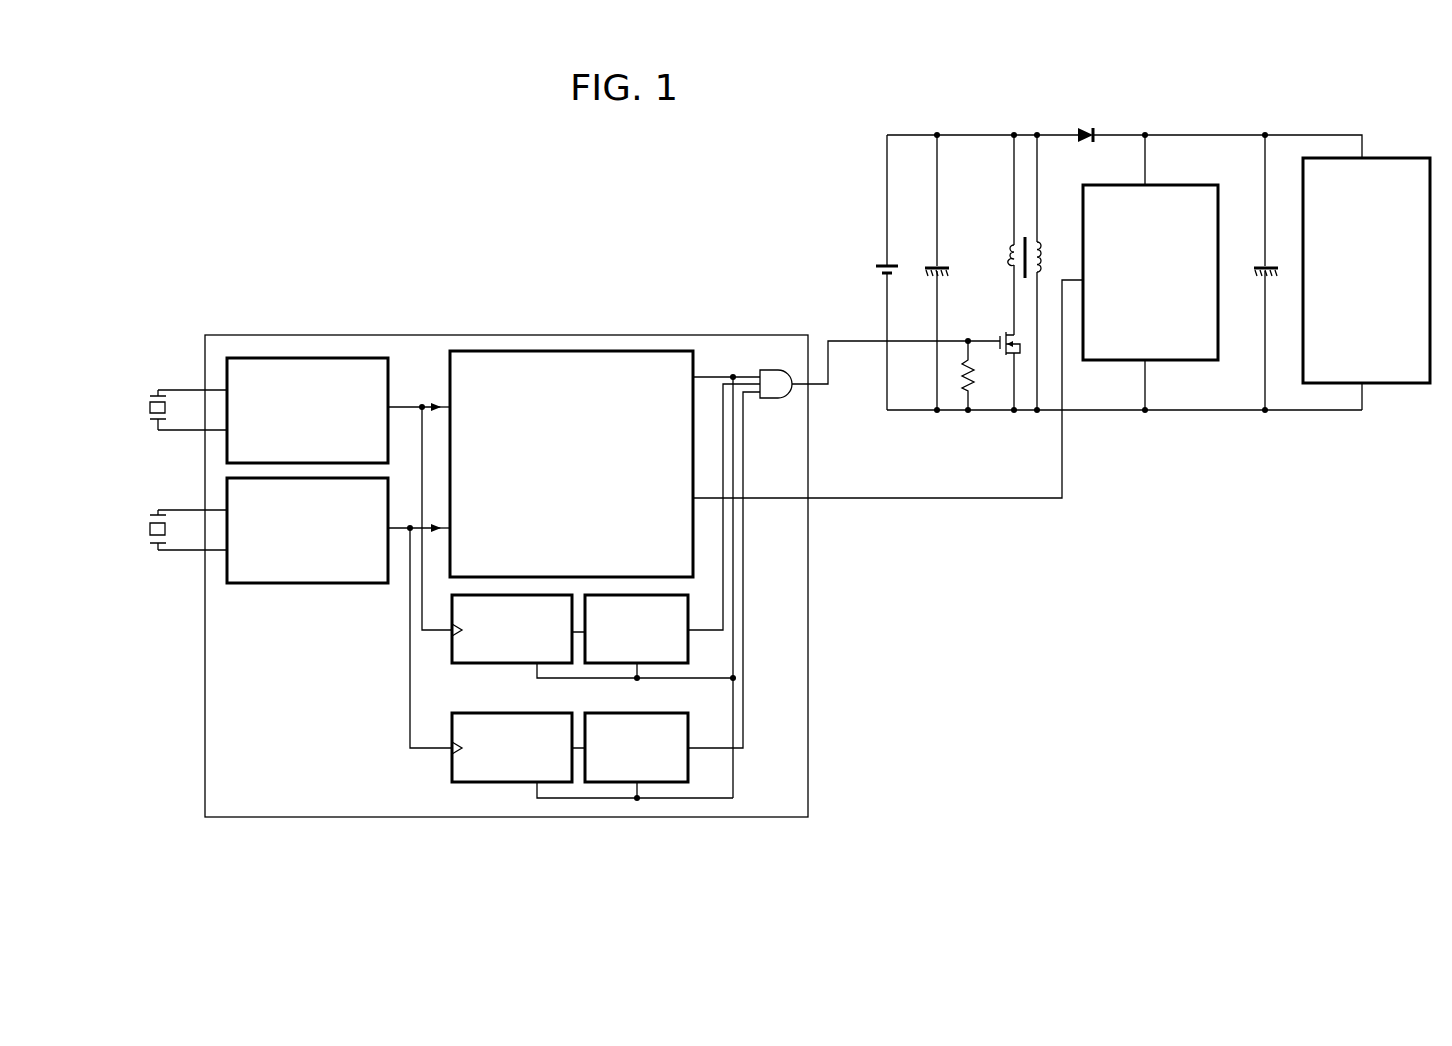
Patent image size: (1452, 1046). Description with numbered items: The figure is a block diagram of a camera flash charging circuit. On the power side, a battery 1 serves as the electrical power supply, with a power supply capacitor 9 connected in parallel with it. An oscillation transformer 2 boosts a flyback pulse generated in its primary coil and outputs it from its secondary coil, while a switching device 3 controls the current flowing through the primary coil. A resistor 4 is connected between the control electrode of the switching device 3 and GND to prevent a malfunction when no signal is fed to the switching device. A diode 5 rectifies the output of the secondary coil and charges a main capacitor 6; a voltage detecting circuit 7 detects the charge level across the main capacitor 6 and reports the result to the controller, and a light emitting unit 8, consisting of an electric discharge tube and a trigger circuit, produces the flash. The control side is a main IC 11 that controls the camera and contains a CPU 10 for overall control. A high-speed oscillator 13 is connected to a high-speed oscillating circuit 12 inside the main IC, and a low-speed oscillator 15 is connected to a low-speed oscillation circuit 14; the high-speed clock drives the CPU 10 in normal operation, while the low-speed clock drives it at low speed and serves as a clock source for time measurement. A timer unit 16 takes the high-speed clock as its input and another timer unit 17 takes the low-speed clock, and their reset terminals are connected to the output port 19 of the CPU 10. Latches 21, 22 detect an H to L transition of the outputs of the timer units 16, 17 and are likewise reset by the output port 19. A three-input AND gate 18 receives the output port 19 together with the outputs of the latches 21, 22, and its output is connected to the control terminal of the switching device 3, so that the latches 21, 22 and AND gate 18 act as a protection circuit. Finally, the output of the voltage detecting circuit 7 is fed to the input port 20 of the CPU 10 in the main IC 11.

The battery 1 is at (882, 264).
The oscillation transformer 2 is at (1012, 247).
The switching device 3 is at (1009, 352).
The resistor 4 is at (968, 396).
The diode 5 is at (1080, 128).
The main capacitor 6 is at (1260, 265).
The voltage detecting circuit 7 is at (1180, 185).
The light emitting unit 8 is at (1325, 158).
The power supply capacitor 9 is at (930, 265).
The CPU 10 is at (515, 351).
The main IC 11 is at (603, 335).
The high-speed oscillating circuit 12 is at (291, 358).
The high-speed oscillator 13 is at (158, 390).
The low-speed oscillation circuit 14 is at (291, 583).
The low-speed oscillator 15 is at (158, 545).
The timer unit 16 is at (452, 648).
The timer unit 17 is at (452, 765).
The 3-input AND gate 18 is at (770, 370).
The output port 19 is at (712, 377).
The input port 20 is at (706, 498).
The latch 21 is at (688, 608).
The latch 22 is at (688, 725).